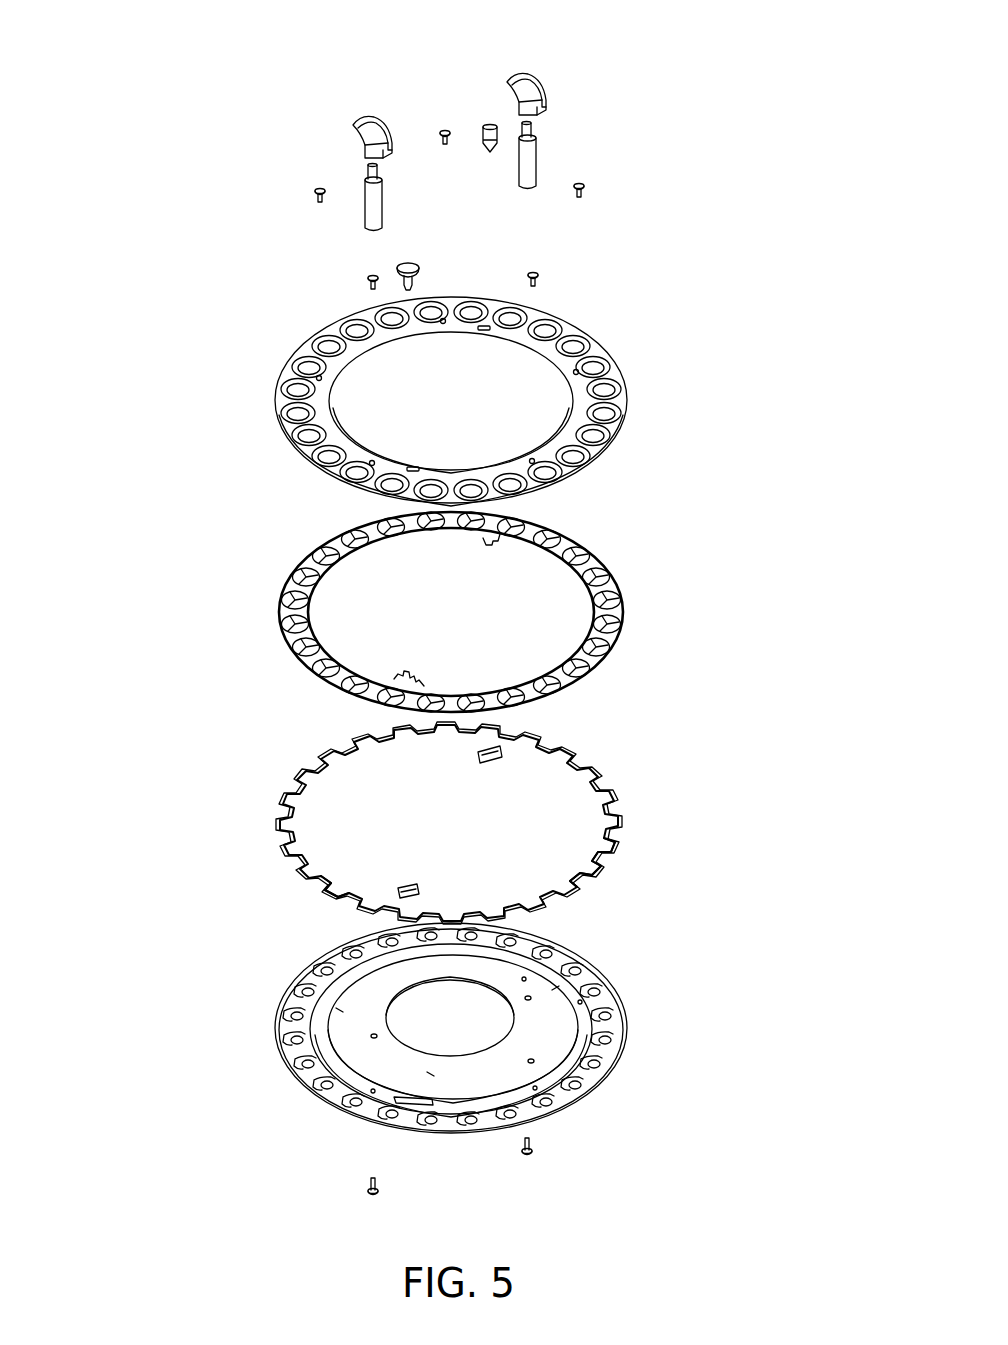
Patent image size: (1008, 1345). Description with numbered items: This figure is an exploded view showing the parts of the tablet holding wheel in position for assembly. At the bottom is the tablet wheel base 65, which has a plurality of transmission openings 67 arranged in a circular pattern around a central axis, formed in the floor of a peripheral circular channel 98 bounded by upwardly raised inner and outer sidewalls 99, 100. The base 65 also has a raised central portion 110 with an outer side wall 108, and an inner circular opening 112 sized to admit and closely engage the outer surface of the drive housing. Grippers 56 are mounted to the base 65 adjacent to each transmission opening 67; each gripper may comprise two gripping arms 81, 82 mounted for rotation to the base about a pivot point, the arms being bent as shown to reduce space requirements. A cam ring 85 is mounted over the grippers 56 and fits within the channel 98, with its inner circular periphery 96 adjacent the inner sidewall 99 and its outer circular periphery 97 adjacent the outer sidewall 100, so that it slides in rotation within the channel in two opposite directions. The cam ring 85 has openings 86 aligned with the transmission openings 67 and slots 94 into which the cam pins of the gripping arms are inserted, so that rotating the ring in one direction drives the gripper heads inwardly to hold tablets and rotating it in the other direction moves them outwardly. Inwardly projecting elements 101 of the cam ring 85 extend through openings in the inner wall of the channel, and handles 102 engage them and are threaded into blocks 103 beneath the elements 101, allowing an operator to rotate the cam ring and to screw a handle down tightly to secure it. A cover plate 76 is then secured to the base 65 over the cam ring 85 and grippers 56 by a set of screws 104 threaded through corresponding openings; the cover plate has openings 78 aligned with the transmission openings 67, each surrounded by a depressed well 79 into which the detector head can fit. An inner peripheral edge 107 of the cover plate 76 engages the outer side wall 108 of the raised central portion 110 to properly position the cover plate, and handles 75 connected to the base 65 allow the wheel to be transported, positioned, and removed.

The grippers 56 is at (620, 817).
The tablet wheel base 65 is at (464, 1048).
The transmission openings 67 is at (607, 993).
The handles 75 is at (352, 117).
The cover plate 76 is at (468, 391).
The openings 78 is at (620, 436).
The depressed well 79 is at (567, 321).
The gripping arm 81 is at (460, 826).
The gripping arm 82 is at (342, 871).
The cam ring 85 is at (456, 612).
The openings 86 is at (592, 548).
The slots 94 is at (545, 556).
The inner circular periphery 96 is at (494, 677).
The outer circular periphery 97 is at (300, 666).
The peripheral circular channel 98 is at (430, 1136).
The inner sidewall 99 is at (302, 1040).
The outer sidewall 100 is at (607, 974).
The inwardly projecting elements 101 is at (483, 540).
The handles 102 is at (488, 152).
The blocks 103 is at (425, 886).
The screws 104 is at (446, 128).
The inner peripheral edge 107 is at (387, 347).
The outer side wall 108 is at (545, 1066).
The raised central portion 110 is at (530, 980).
The inner circular opening 112 is at (400, 992).